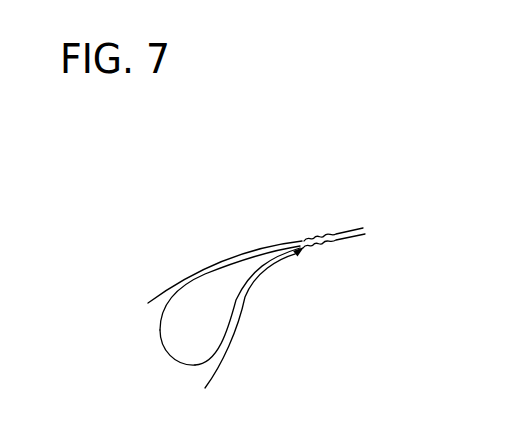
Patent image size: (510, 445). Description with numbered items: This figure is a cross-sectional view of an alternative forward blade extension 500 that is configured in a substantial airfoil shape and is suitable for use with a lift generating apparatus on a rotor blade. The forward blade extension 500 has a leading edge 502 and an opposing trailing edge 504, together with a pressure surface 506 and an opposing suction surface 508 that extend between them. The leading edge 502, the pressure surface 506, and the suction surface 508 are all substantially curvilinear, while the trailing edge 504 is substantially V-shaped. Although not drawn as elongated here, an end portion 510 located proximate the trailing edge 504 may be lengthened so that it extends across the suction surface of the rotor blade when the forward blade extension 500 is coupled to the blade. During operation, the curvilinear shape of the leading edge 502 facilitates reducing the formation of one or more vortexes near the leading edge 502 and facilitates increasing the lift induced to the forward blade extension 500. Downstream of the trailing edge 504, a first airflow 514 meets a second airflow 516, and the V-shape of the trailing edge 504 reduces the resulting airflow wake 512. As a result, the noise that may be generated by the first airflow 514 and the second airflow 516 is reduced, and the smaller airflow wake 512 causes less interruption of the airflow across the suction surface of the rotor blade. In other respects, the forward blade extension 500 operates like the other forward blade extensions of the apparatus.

The forward blade extension 500 is at (140, 215).
The leading edge 502 is at (168, 352).
The trailing edge 504 is at (291, 242).
The pressure surface 506 is at (232, 330).
The suction surface 508 is at (205, 264).
The end portion 510 is at (258, 212).
The airflow wake 512 is at (368, 207).
The first airflow 514 is at (203, 280).
The second airflow 516 is at (240, 333).